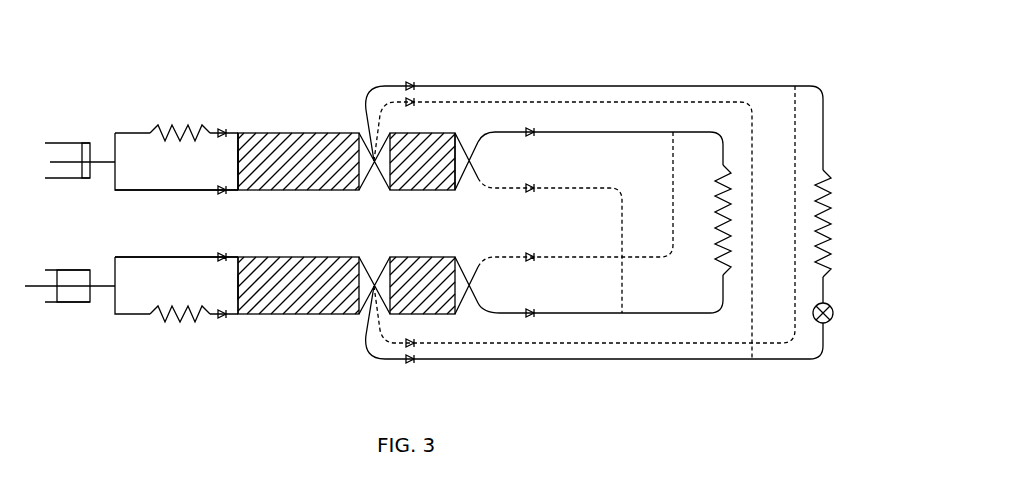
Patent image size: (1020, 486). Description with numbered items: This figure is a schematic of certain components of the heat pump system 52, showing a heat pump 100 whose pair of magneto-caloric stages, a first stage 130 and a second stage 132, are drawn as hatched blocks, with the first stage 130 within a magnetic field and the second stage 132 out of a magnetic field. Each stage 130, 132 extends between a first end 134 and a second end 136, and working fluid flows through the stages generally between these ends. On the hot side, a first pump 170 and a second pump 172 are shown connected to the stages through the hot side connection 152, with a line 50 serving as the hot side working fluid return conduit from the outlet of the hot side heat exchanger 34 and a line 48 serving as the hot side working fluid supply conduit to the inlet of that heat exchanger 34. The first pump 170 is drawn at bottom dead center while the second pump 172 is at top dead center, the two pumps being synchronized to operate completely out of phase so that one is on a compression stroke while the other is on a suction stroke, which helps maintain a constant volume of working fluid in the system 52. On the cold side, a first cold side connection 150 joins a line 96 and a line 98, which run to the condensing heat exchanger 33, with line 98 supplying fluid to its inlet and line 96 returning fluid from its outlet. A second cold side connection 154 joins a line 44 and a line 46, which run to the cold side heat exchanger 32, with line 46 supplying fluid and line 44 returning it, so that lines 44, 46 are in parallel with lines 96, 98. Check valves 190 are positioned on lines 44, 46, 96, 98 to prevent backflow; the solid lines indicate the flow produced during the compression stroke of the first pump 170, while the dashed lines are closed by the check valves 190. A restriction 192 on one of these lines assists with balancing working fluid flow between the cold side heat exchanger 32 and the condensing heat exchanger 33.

The cold side heat exchanger 32 is at (715, 202).
The condensing heat exchanger 33 is at (824, 277).
The hot side heat exchanger 34 is at (178, 122).
The first cold side working fluid return conduit 44 is at (598, 188).
The first cold side working fluid supply conduit 46 is at (600, 132).
The hot side working fluid supply conduit 48 is at (155, 191).
The hot side working fluid return conduit 50 is at (128, 133).
The heat pump system 52 is at (70, 64).
The second cold side working fluid return conduit 96 is at (753, 147).
The second cold side working fluid supply conduit 98 is at (622, 86).
The heat pump 100 is at (351, 364).
The first stage 130 is at (297, 170).
The second stage 132 is at (427, 273).
The first end 134 is at (463, 205).
The second end 136 is at (244, 122).
The first cold side connection 150 is at (367, 162).
The hot side connection 152 is at (238, 162).
The second cold side connection 154 is at (465, 174).
The first pump 170 is at (72, 142).
The second pump 172 is at (80, 268).
The check valve 190 is at (223, 129).
The restriction 192 is at (827, 323).